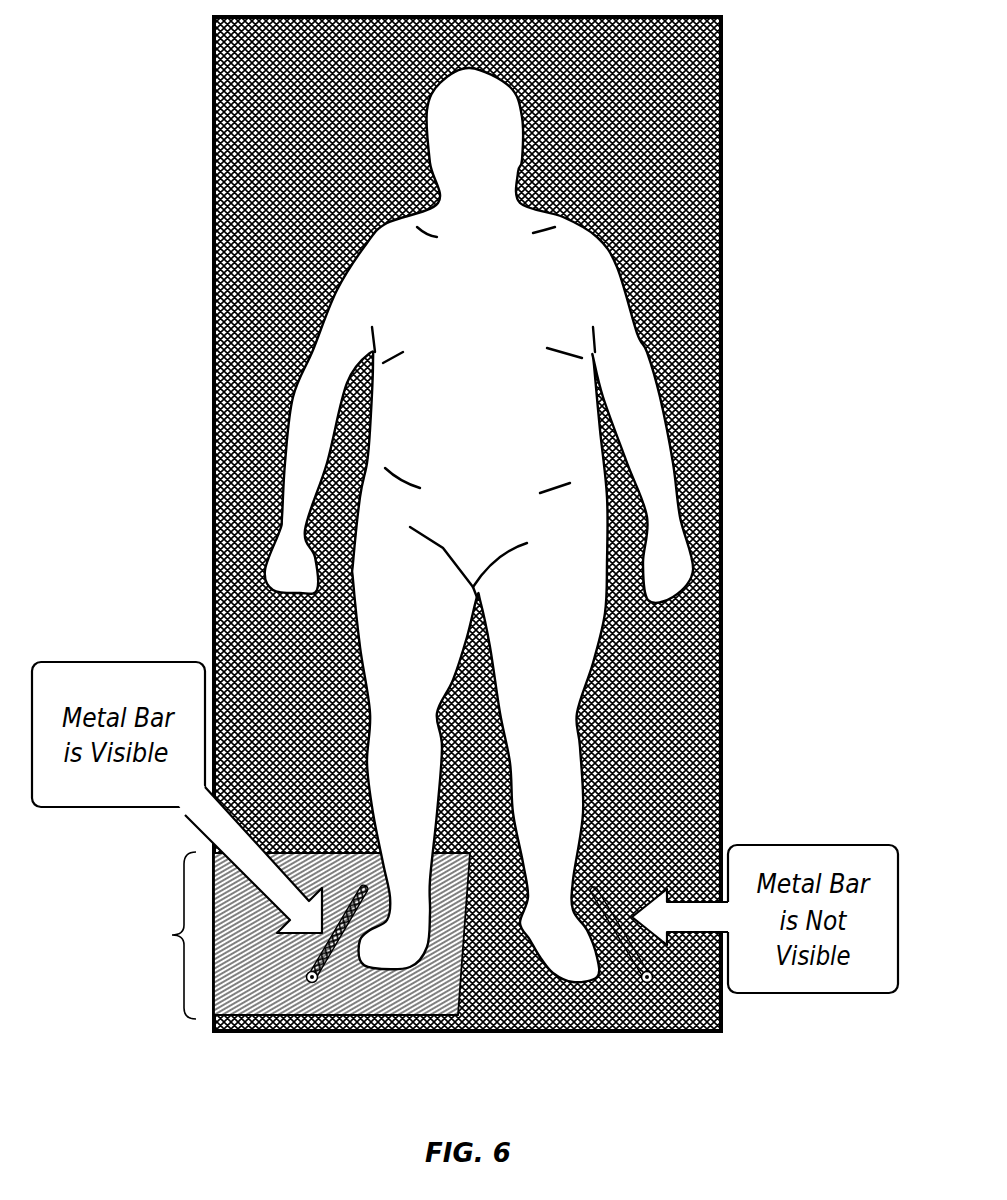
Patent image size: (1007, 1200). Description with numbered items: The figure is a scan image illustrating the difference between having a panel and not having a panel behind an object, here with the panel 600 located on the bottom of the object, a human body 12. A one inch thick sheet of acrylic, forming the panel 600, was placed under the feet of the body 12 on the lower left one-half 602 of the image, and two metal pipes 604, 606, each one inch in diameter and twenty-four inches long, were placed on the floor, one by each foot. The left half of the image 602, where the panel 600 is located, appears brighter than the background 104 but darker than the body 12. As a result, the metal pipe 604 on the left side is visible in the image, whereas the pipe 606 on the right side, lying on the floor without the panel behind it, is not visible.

The background 104 is at (687, 207).
The body 12 is at (497, 326).
The panel 600 is at (395, 1000).
The lower left one-half of the image 602 is at (171, 936).
The metal pipe 604 is at (308, 982).
The metal pipe 606 is at (650, 982).